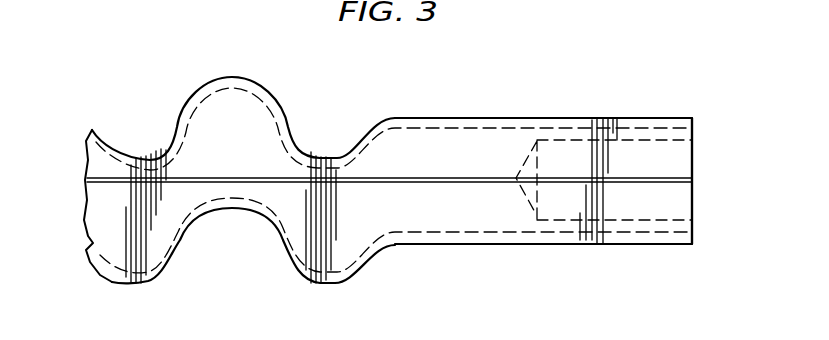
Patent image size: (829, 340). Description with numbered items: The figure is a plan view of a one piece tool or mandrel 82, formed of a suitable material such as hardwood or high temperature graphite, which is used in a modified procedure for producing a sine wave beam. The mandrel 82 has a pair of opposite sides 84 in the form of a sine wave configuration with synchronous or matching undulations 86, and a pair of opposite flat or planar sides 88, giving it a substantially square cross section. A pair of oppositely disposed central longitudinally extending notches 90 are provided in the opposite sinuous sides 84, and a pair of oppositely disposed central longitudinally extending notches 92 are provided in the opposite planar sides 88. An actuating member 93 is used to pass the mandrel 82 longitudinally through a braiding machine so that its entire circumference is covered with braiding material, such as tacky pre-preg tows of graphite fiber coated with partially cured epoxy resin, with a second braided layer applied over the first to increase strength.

The mandrel 82 is at (524, 94).
The sinuous sides 84 is at (280, 102).
The undulations 86 is at (232, 77).
The planar sides 88 is at (513, 139).
The notches 90 is at (130, 160).
The notches 92 is at (407, 178).
The actuating member 93 is at (676, 140).